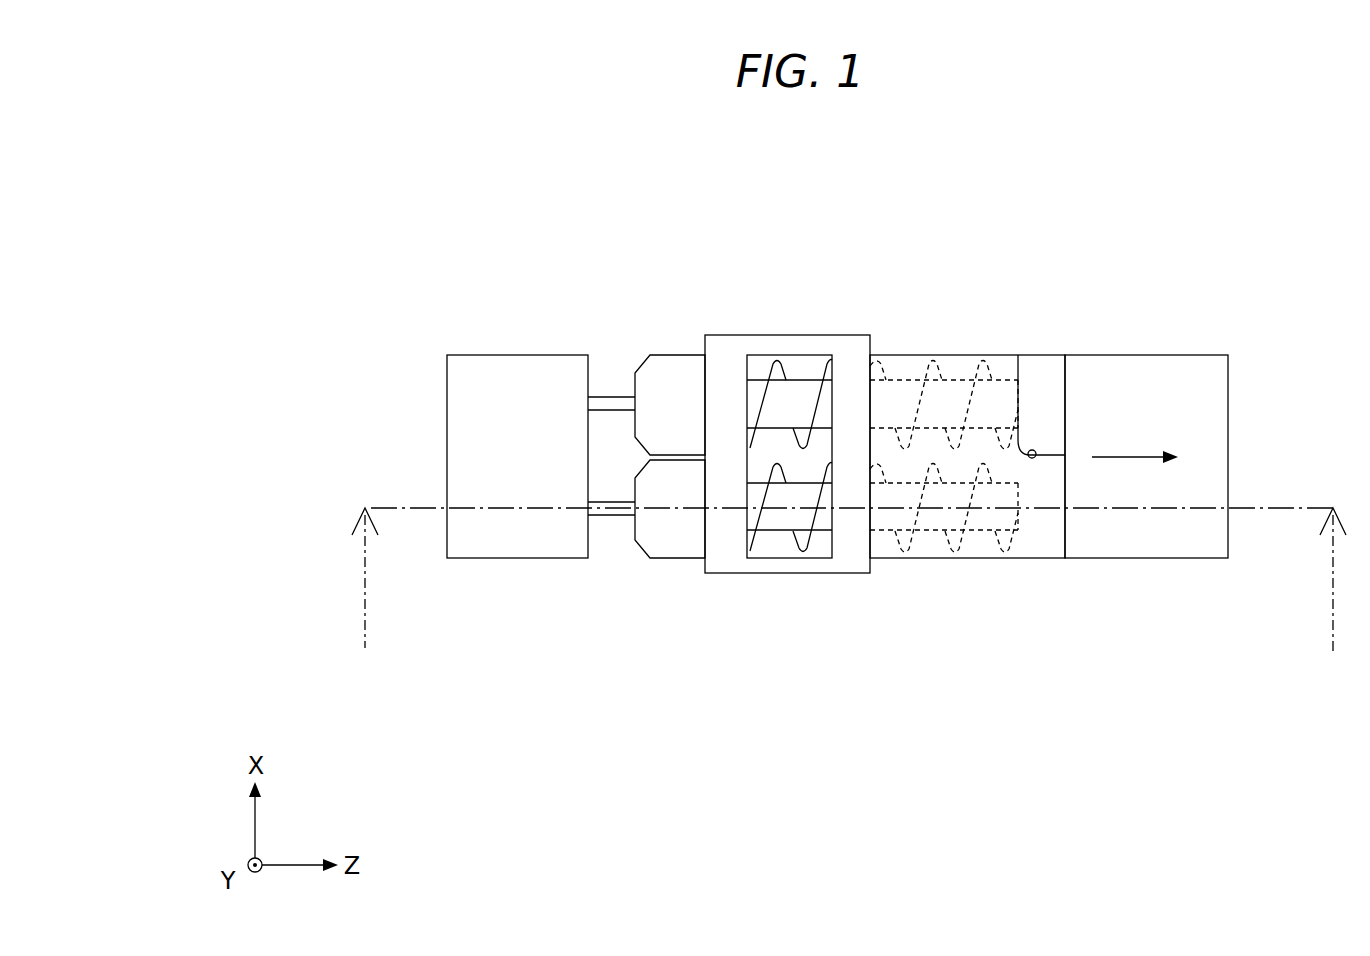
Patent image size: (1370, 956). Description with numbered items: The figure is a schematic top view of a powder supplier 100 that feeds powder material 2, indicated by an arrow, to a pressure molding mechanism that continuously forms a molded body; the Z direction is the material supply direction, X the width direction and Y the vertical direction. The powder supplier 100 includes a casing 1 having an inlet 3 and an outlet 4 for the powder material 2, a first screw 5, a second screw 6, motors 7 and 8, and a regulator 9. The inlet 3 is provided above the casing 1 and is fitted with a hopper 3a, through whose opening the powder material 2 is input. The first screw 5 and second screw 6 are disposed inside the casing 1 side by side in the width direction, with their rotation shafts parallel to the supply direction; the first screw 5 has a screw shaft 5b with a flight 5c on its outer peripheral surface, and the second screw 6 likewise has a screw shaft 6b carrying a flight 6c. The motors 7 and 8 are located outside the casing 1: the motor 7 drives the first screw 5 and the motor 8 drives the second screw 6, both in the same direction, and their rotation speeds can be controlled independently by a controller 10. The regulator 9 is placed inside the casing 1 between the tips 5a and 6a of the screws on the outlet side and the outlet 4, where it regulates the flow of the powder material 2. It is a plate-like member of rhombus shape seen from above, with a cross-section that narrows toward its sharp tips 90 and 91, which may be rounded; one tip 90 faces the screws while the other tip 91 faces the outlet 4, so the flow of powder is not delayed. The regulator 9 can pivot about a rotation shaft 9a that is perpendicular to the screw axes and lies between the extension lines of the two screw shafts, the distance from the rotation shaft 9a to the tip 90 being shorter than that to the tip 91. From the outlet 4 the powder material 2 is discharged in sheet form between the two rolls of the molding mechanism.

The powder supplier 100 is at (516, 160).
The controller 10 is at (511, 558).
The motor 8 is at (677, 355).
The motor 7 is at (675, 558).
The inlet 3 is at (747, 455).
The hopper 3a is at (730, 573).
The casing 1 is at (1048, 558).
The outlet 4 is at (1228, 373).
The second screw 6 is at (944, 317).
The tip of second screw 6a is at (999, 348).
The screw shaft 6b is at (945, 362).
The flight 6c is at (982, 362).
The first screw 5 is at (944, 596).
The tip of first screw 5a is at (1018, 558).
The screw shaft 5b is at (925, 550).
The flight 5c is at (952, 552).
The regulator 9 is at (1088, 319).
The rotation shaft 9a is at (1042, 450).
The tip of regulator 90 is at (1032, 447).
The tip of regulator 91 is at (1068, 448).
The powder material 2 is at (1185, 305).